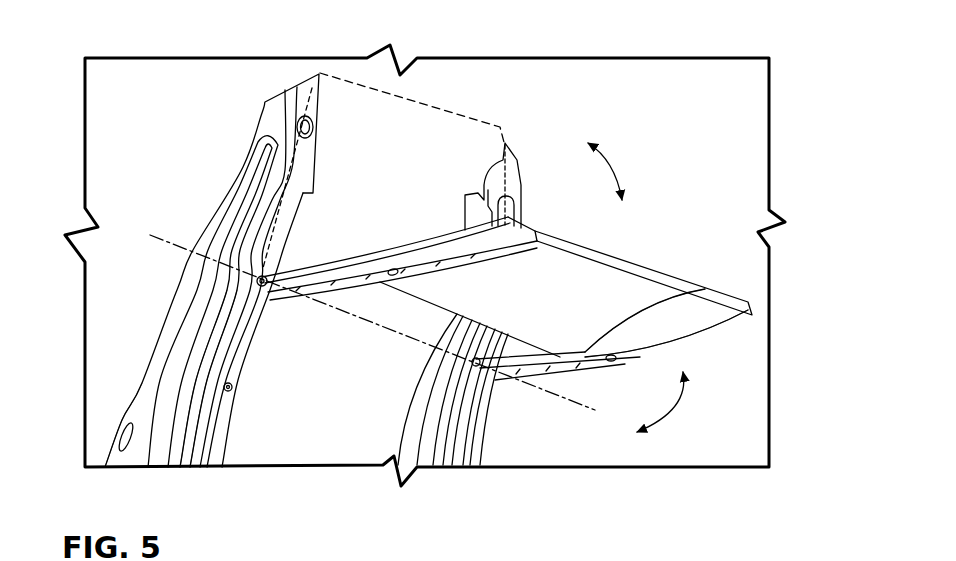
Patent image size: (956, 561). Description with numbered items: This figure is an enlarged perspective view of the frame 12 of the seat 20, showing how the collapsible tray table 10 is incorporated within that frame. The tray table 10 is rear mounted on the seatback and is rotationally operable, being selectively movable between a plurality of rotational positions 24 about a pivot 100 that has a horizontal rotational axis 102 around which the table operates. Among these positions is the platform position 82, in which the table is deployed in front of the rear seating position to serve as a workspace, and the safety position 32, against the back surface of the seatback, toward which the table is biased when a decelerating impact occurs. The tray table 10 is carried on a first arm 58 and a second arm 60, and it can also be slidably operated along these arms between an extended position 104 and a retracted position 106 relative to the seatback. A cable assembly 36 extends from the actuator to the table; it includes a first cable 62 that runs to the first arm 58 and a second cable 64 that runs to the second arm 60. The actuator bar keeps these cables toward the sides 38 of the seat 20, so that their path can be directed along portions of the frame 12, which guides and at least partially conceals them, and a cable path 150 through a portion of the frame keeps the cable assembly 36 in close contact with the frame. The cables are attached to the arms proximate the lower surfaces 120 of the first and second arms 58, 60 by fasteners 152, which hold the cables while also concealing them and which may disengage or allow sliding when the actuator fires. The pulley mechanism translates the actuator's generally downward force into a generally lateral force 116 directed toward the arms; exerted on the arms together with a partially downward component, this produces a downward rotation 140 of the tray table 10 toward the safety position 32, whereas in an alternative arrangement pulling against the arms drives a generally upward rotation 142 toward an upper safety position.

The seat 20 is at (183, 77).
The frame 12 is at (198, 219).
The second arm 60 is at (423, 252).
The pivot 100 is at (262, 278).
The second cable 64 is at (250, 307).
The cable assembly 36 is at (233, 332).
The sides 38 is at (147, 388).
The safety position 32 is at (425, 98).
The extended position 104 is at (443, 225).
The collapsible tray table 10 is at (665, 208).
The lateral force 116 is at (383, 290).
The retracted position 106 is at (403, 333).
The first cable 62 is at (458, 418).
The first arm 58 is at (703, 330).
The fasteners 152 is at (670, 306).
The lower surfaces 120 is at (680, 340).
The horizontal rotational axis 102 is at (557, 397).
The cable path 150 is at (240, 392).
The upward rotation 142 is at (610, 158).
The downward rotation 140 is at (668, 418).
The rotational positions 24 is at (713, 214).
The platform position 82 is at (718, 272).